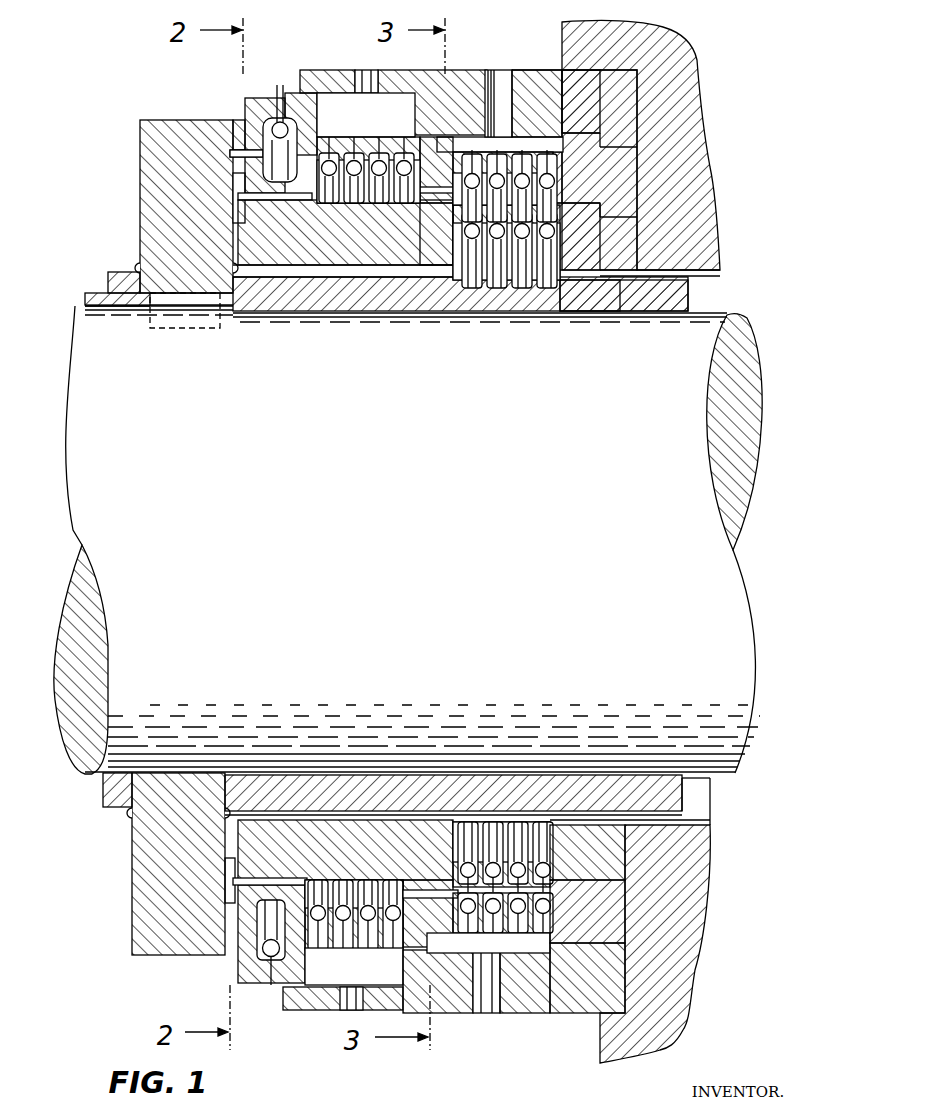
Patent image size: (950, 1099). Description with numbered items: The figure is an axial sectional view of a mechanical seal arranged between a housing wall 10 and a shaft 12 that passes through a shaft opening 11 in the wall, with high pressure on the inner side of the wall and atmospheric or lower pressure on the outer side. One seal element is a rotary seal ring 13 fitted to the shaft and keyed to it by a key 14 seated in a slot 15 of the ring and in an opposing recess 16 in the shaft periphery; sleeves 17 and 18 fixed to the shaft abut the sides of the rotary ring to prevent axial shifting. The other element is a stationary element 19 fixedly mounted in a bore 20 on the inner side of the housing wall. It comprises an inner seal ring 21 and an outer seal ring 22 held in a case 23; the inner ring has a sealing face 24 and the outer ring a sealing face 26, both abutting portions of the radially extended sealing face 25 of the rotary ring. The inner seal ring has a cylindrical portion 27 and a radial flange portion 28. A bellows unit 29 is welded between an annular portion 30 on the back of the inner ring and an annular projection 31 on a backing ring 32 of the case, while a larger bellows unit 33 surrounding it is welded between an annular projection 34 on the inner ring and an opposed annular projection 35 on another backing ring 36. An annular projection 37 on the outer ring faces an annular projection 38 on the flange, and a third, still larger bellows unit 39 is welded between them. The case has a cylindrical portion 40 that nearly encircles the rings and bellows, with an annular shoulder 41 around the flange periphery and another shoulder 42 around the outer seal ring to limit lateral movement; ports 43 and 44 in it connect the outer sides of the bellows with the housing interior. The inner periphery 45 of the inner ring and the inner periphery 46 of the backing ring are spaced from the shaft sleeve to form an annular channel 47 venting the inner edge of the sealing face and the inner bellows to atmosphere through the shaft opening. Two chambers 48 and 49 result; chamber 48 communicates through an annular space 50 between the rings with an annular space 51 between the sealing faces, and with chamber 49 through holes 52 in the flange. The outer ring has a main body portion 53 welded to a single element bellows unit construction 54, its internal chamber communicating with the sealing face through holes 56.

The housing wall 10 is at (700, 80).
The shaft opening 11 is at (712, 275).
The shaft 12 is at (718, 580).
The rotary seal ring 13 is at (140, 152).
The key 14 is at (178, 300).
The slot 15 is at (140, 296).
The recess 16 is at (150, 323).
The sleeve 17 is at (110, 280).
The sleeve 18 is at (680, 305).
The stationary element 19 is at (452, 70).
The bore 20 is at (555, 72).
The inner seal ring 21 is at (305, 270).
The outer seal ring 22 is at (322, 98).
The case 23 is at (486, 100).
The sealing face 24 is at (240, 243).
The sealing face 25 is at (235, 160).
The sealing face 26 is at (240, 128).
The cylindrical portion 27 is at (375, 292).
The flange portion 28 is at (430, 185).
The bellows unit 29 is at (490, 280).
The annular portion 30 is at (460, 205).
The annular projection 31 is at (553, 210).
The backing ring 32 is at (592, 282).
The bellows unit 33 is at (557, 192).
The annular projection 34 is at (465, 160).
The annular projection 35 is at (563, 155).
The backing ring 36 is at (633, 165).
The annular projection 37 is at (330, 145).
The annular projection 38 is at (396, 148).
The bellows unit 39 is at (360, 195).
The cylindrical portion 40 is at (527, 80).
The annular shoulder 41 is at (408, 960).
The shoulder 42 is at (300, 995).
The port 43 is at (487, 1013).
The port 44 is at (345, 1000).
The inner periphery 45 is at (300, 818).
The inner periphery 46 is at (570, 820).
The annular channel 47 is at (630, 825).
The chamber 48 is at (320, 895).
The chamber 49 is at (445, 870).
The annular space 50 is at (275, 200).
The annular space 51 is at (232, 207).
The holes 52 is at (410, 893).
The main body portion 53 is at (248, 110).
The single element bellows unit construction 54 is at (272, 118).
The holes 56 is at (240, 930).